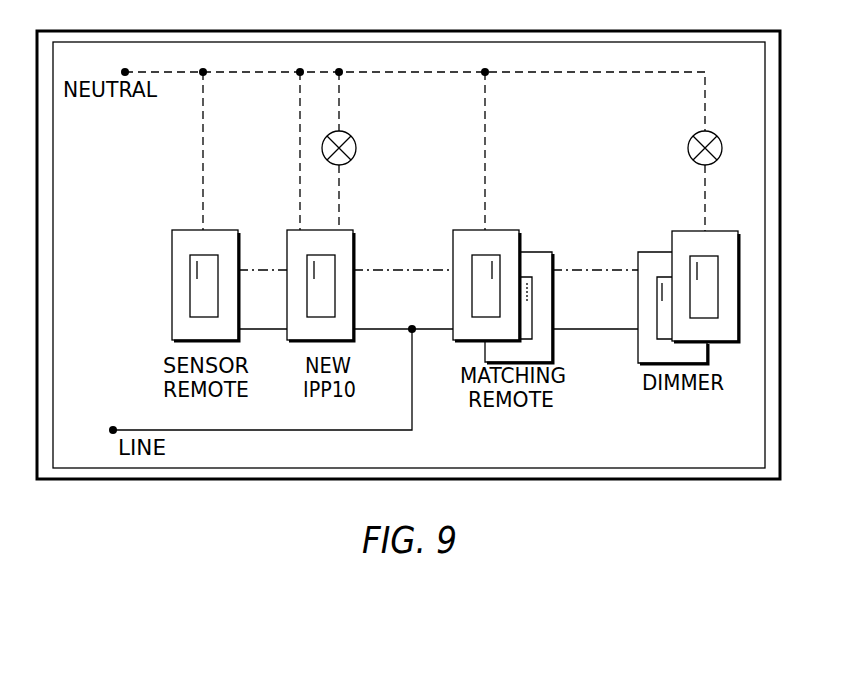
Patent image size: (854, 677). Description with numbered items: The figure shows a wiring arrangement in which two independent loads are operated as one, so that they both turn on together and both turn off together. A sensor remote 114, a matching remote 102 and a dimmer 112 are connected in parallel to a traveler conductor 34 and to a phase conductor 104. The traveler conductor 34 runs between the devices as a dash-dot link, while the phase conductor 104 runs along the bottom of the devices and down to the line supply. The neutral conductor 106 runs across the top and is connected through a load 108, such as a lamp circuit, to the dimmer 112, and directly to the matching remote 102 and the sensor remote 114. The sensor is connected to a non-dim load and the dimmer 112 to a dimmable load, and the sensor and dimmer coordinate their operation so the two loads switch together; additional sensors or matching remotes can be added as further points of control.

The traveler conductor 34 is at (382, 270).
The matching remote 102 is at (503, 230).
The phase conductor 104 is at (605, 330).
The neutral conductor 106 is at (368, 73).
The load 108 is at (356, 148).
The dimmer 112 is at (705, 231).
The sensor remote 114 is at (212, 230).